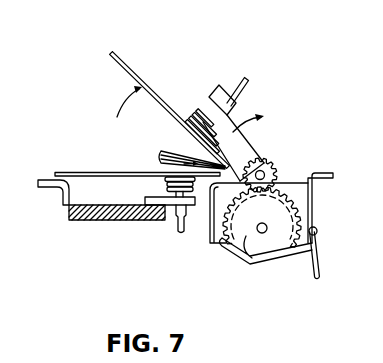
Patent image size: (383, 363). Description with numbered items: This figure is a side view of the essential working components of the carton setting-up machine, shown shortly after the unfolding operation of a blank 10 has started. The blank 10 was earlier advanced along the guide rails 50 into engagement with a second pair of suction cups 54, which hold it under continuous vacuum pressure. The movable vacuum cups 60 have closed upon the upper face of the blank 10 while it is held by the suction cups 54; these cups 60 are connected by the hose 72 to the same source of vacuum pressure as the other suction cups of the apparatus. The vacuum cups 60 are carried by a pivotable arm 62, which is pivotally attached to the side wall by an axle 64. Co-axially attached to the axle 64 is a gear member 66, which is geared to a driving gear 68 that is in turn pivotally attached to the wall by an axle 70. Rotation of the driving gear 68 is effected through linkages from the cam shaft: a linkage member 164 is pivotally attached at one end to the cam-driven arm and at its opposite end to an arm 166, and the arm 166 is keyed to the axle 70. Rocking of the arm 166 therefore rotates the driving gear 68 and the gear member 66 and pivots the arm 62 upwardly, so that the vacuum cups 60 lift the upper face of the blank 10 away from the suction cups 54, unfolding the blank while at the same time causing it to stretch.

The blank 10 is at (127, 58).
The guide rails 50 is at (52, 188).
The suction cups 54 is at (157, 185).
The movable vacuum cups 60 is at (186, 110).
The pivotable arms 62 is at (244, 143).
The axles 64 is at (259, 161).
The gear members 66 is at (275, 168).
The driving gears 68 is at (318, 193).
The axles 70 is at (250, 255).
The hose 72 is at (237, 88).
The linkage members 164 is at (322, 262).
The arms 166 is at (320, 236).